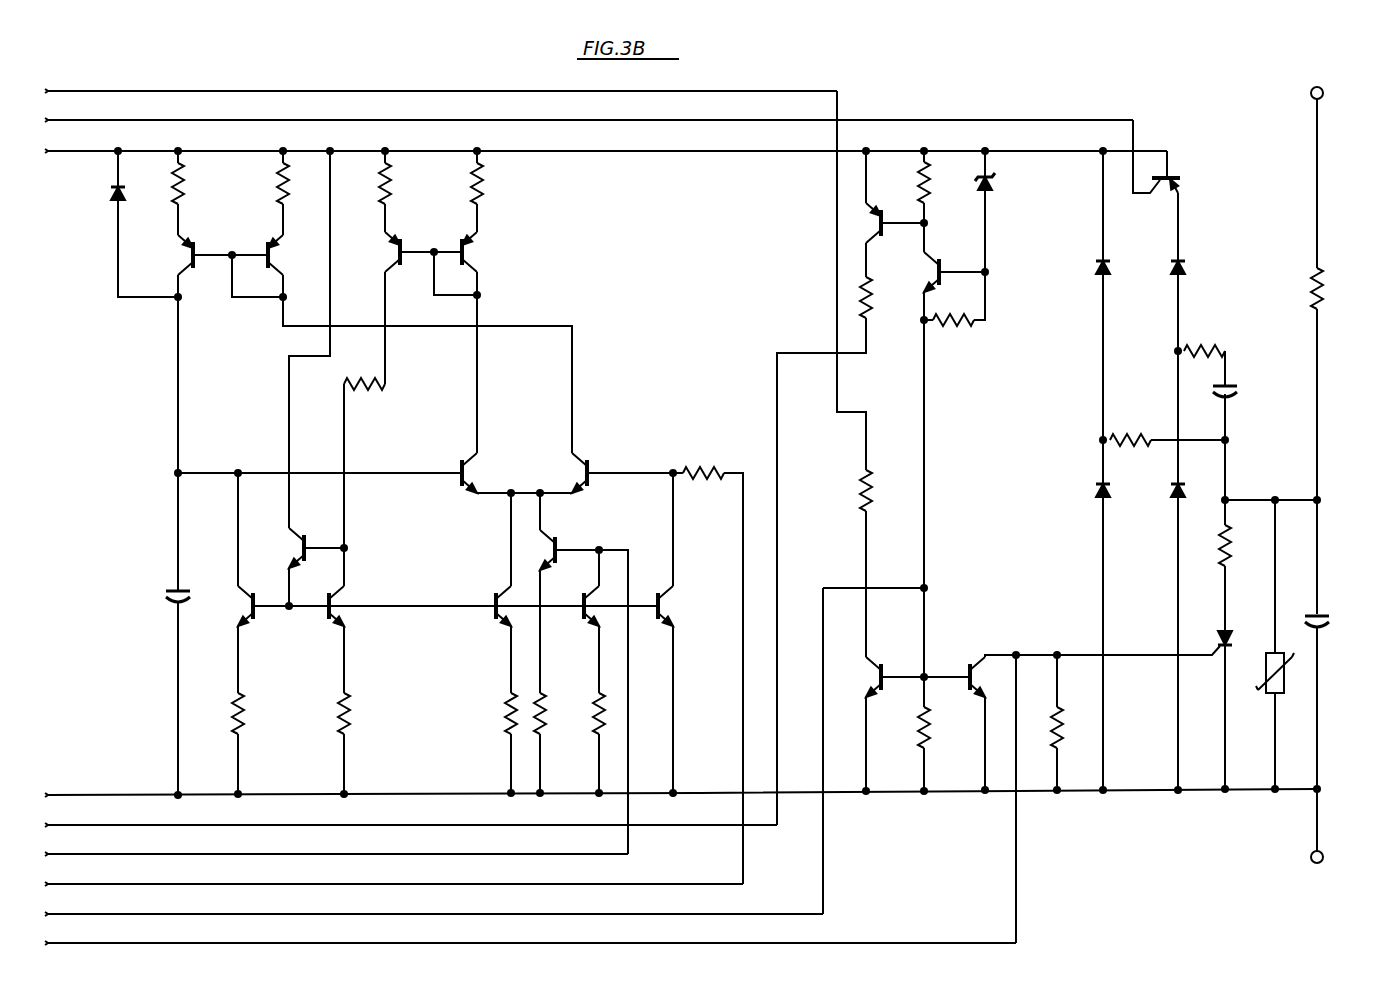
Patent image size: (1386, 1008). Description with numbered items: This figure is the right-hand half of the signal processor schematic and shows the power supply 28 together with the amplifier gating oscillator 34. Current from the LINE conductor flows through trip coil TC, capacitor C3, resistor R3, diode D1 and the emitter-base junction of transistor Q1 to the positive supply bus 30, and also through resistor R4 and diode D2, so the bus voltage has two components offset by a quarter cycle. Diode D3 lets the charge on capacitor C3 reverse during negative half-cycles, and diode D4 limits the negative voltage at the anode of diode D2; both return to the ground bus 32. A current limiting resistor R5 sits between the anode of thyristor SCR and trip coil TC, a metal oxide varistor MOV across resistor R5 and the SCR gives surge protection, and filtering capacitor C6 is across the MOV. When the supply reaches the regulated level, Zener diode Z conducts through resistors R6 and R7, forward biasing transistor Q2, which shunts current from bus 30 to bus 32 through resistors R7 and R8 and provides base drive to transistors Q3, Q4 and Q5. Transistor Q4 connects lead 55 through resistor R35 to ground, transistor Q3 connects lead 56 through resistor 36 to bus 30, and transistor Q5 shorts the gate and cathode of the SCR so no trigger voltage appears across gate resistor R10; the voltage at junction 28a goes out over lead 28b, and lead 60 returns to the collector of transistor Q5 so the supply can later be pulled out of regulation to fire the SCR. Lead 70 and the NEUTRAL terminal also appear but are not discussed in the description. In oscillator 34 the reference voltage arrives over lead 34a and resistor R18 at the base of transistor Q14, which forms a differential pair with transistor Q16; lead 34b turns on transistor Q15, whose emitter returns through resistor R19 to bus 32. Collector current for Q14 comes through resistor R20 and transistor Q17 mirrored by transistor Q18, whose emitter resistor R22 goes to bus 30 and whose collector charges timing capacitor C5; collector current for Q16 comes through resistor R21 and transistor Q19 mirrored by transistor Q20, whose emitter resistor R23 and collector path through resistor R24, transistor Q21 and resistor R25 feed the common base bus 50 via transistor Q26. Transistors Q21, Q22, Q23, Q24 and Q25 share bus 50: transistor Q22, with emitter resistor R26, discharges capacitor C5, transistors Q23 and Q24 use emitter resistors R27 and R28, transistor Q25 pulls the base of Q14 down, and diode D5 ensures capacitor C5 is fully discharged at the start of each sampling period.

The lead 55 is at (62, 92).
The line 70 is at (60, 121).
The positive supply voltage bus 30 is at (60, 152).
The ground bus 32 is at (62, 796).
The lead 56 is at (58, 826).
The lead 34b is at (58, 855).
The lead 34a is at (58, 885).
The lead 28b is at (58, 915).
The lead 60 is at (58, 944).
The amplifier gating oscillator 34 is at (592, 378).
The common base bus 50 is at (404, 604).
The power supply 28 is at (1030, 466).
The junction 28a is at (928, 590).
The resistor 36 is at (872, 298).
The diode D5 is at (110, 194).
The diode D2 is at (1110, 267).
The diode D1 is at (1185, 267).
The diode D4 is at (1110, 490).
The diode D3 is at (1185, 490).
The Zener diode Z is at (993, 183).
The thyristor SCR is at (1238, 636).
The resistor R22 is at (188, 180).
The resistor R20 is at (274, 195).
The resistor R23 is at (393, 180).
The resistor R21 is at (470, 203).
The resistor R8 is at (932, 180).
The resistor R35 is at (872, 490).
The resistor R26 is at (244, 715).
The resistor R25 is at (350, 715).
The resistor R27 is at (504, 713).
The resistor R19 is at (546, 700).
The resistor R28 is at (592, 715).
The resistor R7 is at (930, 726).
The gate resistor R10 is at (1063, 726).
The current limiting resistor R5 is at (1231, 548).
The trip coil TC is at (1308, 287).
The resistor R24 is at (358, 392).
The resistor R18 is at (698, 466).
The resistor R6 is at (945, 330).
The resistor R3 is at (1202, 343).
The resistor R4 is at (1140, 428).
The timing capacitor C5 is at (164, 601).
The capacitor C3 is at (1239, 392).
The filtering capacitor C6 is at (1331, 623).
The metal oxide varistor MOV is at (1264, 695).
The transistor Q18 is at (190, 256).
The transistor Q17 is at (272, 256).
The transistor Q20 is at (398, 253).
The transistor Q19 is at (466, 253).
The transistor Q16 is at (470, 472).
The transistor Q14 is at (590, 458).
The transistor Q15 is at (553, 536).
The transistor Q23 is at (504, 622).
The transistor Q24 is at (578, 620).
The transistor Q25 is at (662, 608).
The transistor Q22 is at (238, 618).
The transistor Q26 is at (300, 548).
The transistor Q21 is at (340, 600).
The transistor Q3 is at (878, 224).
The transistor Q2 is at (940, 262).
The transistor Q4 is at (878, 678).
The transistor Q5 is at (974, 674).
The transistor Q1 is at (1176, 176).
The line conductor LINE is at (1311, 80).
The neutral terminal NEUTRAL is at (1306, 870).